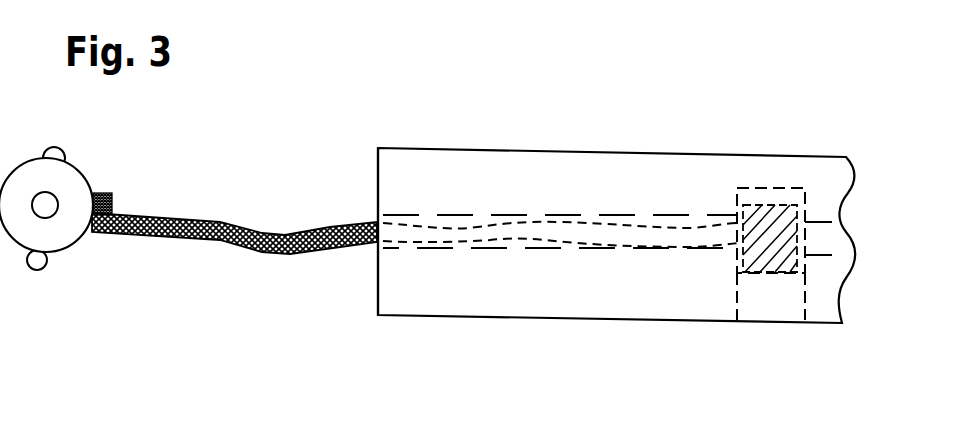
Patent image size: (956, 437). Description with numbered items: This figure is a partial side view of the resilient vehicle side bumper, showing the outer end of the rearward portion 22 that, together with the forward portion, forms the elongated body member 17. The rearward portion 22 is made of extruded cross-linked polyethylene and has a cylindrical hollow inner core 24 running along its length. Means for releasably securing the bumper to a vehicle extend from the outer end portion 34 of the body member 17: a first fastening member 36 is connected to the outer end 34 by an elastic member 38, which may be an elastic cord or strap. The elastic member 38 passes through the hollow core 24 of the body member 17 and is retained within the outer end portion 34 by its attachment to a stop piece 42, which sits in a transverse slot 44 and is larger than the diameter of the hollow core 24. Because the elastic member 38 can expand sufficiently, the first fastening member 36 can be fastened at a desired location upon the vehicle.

The elongated body member 17 is at (468, 152).
The rearward portion 22 is at (433, 290).
The cylindrical hollow inner core 24 is at (555, 245).
The outer end portion 34 is at (377, 159).
The first fastening member 36 is at (60, 178).
The elastic member 38 is at (142, 215).
The stop piece 42 is at (757, 197).
The transverse slot 44 is at (752, 303).